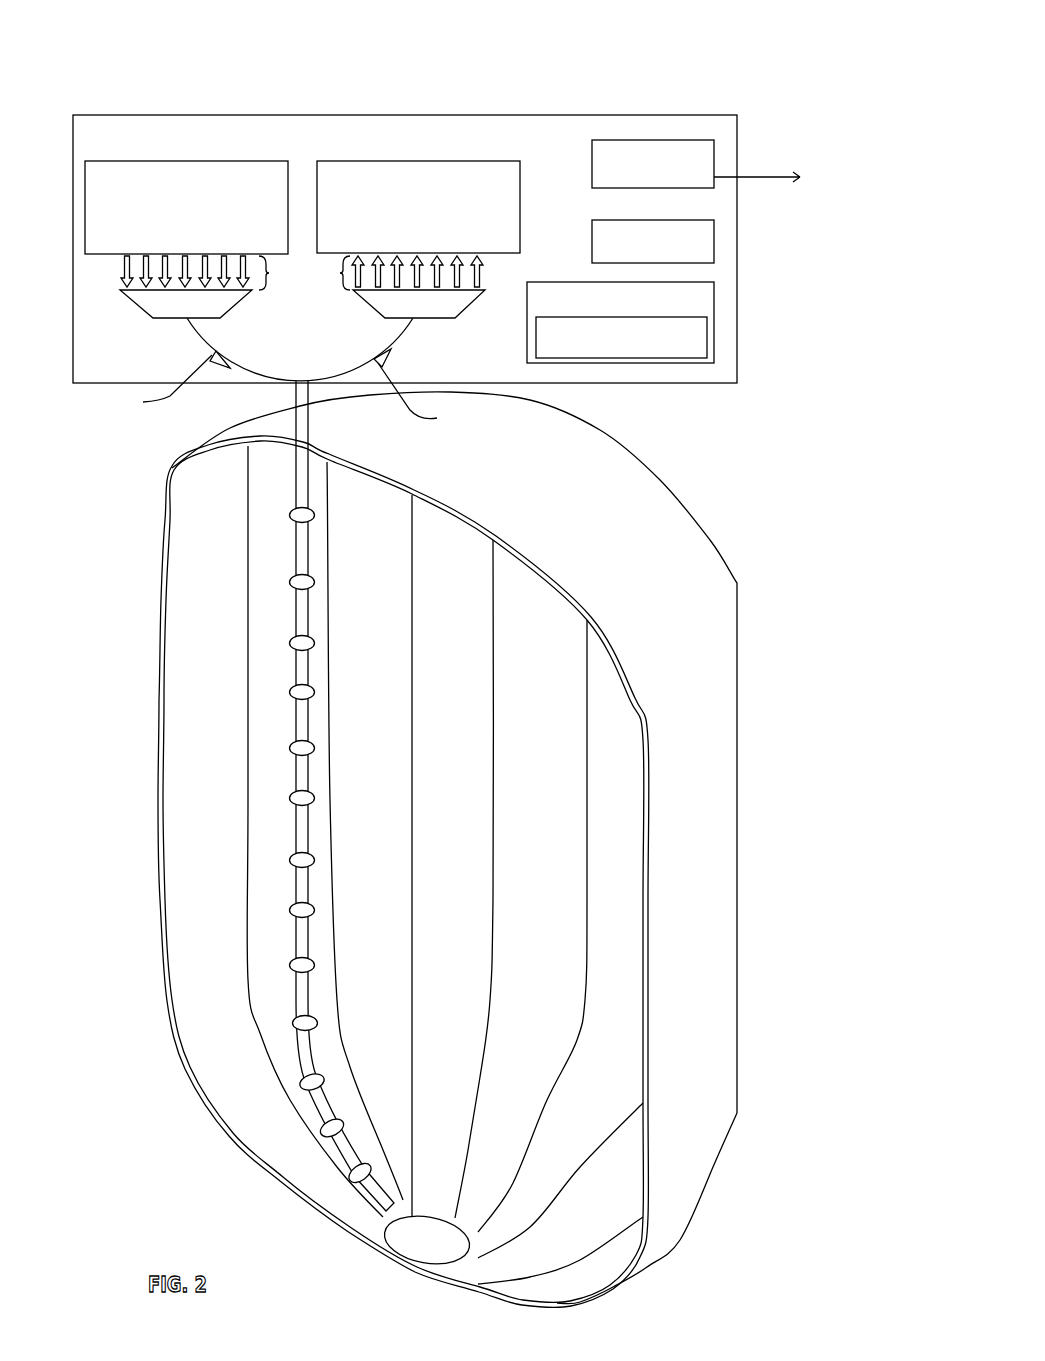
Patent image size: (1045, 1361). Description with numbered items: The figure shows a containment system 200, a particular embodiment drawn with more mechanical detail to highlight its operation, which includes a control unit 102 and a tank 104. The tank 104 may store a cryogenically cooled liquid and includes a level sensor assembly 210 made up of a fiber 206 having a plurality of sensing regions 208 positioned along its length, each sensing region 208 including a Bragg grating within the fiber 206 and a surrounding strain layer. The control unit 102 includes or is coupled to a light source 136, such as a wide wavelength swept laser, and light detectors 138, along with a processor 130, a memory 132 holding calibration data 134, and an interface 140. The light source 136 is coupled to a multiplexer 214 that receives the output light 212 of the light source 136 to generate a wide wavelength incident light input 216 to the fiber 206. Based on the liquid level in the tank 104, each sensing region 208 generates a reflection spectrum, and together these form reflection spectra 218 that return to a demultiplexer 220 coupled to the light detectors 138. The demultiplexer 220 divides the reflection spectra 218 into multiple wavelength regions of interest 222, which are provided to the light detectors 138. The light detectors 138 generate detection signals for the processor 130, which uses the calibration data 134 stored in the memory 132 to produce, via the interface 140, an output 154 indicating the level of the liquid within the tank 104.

The containment system 200 is at (163, 59).
The control unit 102 is at (132, 115).
The tank 104 is at (673, 493).
The processor 130 is at (592, 228).
The memory 132 is at (548, 282).
The calibration data 134 is at (536, 340).
The light source 136 is at (265, 161).
The light detectors 138 is at (420, 161).
The interface 140 is at (592, 153).
The output 154 is at (771, 160).
The fiber 206 is at (305, 440).
The sensing regions 208 is at (314, 578).
The level sensor assembly 210 is at (145, 672).
The output light 212 is at (271, 276).
The multiplexer 214 is at (147, 312).
The incident light input 216 is at (164, 384).
The reflection spectra 218 is at (429, 392).
The demultiplexer 220 is at (383, 318).
The wavelength regions of interest 222 is at (341, 273).